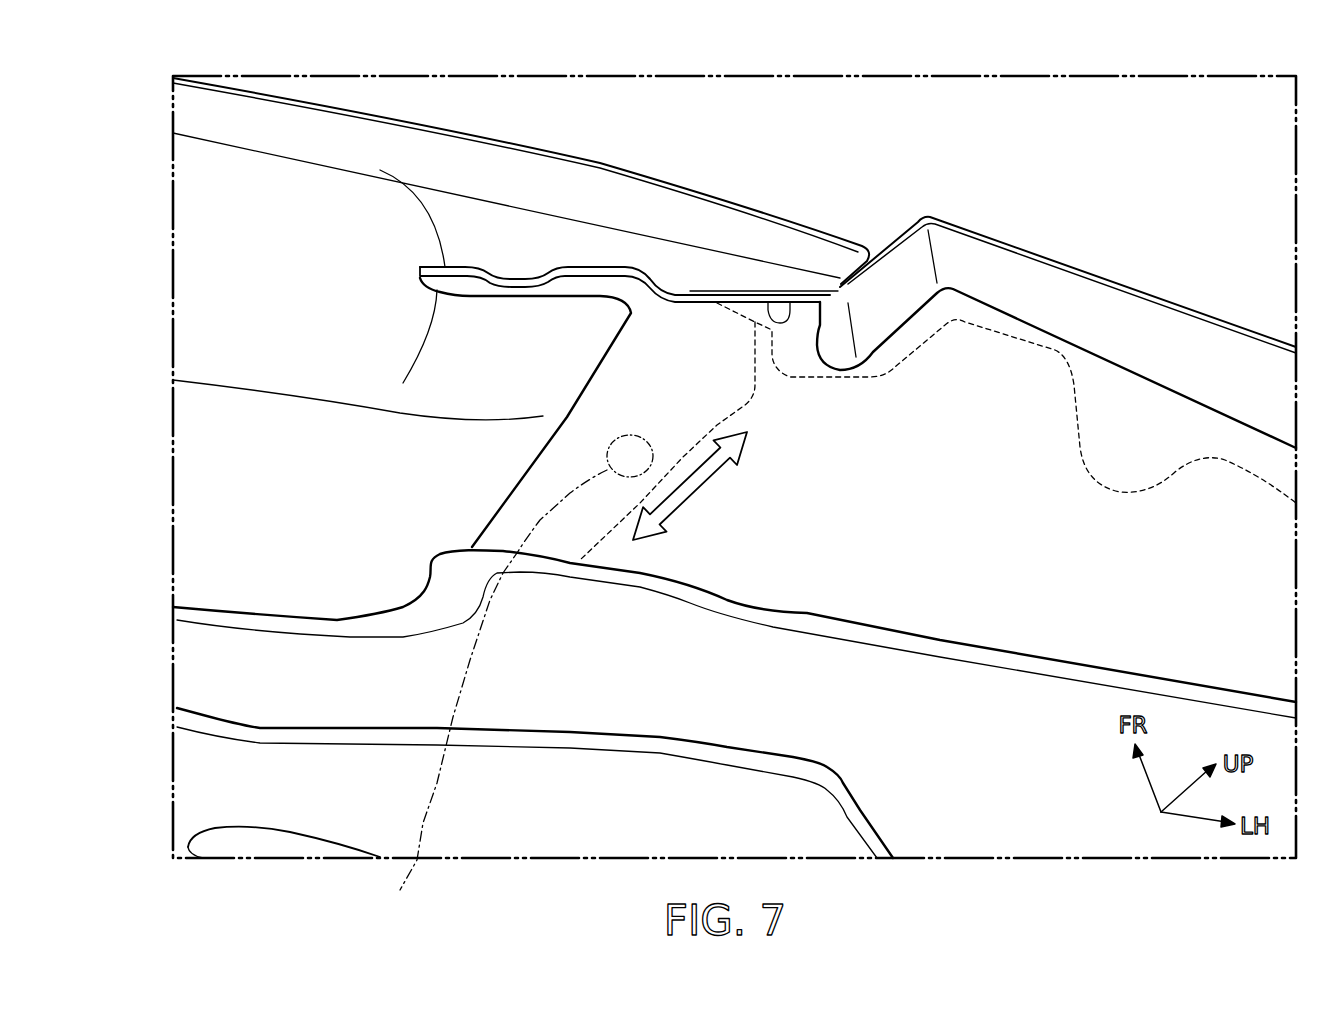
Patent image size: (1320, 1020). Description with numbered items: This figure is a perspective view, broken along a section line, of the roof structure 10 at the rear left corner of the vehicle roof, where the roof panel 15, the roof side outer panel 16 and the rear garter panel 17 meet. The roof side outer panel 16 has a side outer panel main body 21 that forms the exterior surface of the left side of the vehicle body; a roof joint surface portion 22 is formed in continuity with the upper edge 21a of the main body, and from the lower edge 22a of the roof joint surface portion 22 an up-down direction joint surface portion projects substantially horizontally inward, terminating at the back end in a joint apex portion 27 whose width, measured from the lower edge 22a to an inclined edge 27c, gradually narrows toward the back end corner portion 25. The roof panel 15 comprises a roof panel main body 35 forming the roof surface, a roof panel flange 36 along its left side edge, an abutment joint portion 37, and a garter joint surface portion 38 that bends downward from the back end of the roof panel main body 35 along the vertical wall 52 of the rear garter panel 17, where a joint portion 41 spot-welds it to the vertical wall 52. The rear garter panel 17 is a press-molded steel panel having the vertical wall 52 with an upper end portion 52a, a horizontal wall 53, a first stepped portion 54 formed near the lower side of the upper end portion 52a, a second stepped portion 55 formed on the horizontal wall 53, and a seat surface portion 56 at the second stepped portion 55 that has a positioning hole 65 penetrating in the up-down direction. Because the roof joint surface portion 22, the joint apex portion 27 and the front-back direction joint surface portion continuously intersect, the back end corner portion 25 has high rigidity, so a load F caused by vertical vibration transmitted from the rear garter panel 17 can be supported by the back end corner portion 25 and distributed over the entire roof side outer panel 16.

The roof structure 10 is at (625, 97).
The roof panel 15 is at (409, 116).
The roof side outer panel 16 is at (1161, 283).
The rear garter panel 17 is at (875, 605).
The side outer panel main body 21 is at (1090, 262).
The upper edge 21a is at (925, 216).
The roof joint surface portion 22 is at (877, 283).
The lower edge 22a is at (838, 283).
The back end corner portion 25 is at (837, 353).
The joint apex portion 27 is at (753, 290).
The inclined edge 27c is at (697, 290).
The roof panel main body 35 is at (532, 138).
The roof panel flange 36 is at (852, 256).
The abutment joint portion 37 is at (880, 278).
The garter joint surface portion 38 is at (339, 393).
The joint portion 41 is at (517, 681).
The vertical wall 52 is at (1090, 650).
The upper end portion 52a is at (1153, 410).
The horizontal wall 53 is at (791, 312).
The first stepped portion 54 is at (1055, 521).
The second stepped portion 55 is at (658, 287).
The seat surface portion 56 is at (447, 267).
The positioning hole 65 is at (535, 268).
The load F is at (678, 505).